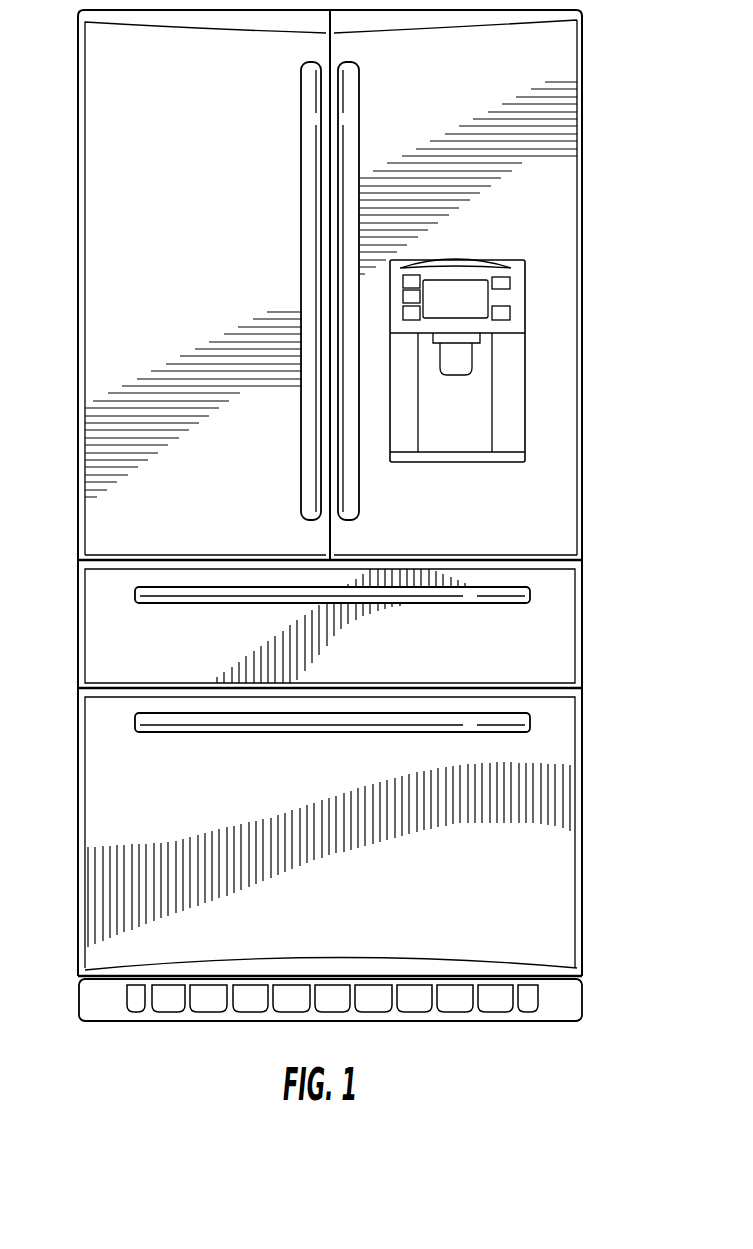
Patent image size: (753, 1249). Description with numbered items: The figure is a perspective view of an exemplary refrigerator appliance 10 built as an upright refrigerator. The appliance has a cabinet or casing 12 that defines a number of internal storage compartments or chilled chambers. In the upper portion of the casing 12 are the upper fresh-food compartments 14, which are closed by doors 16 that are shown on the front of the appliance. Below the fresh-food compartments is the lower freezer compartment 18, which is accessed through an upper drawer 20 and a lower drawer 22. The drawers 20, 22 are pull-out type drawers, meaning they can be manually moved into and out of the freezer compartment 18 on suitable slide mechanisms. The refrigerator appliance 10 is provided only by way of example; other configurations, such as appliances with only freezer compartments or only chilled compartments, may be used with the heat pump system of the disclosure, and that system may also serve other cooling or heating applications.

The refrigerator appliance 10 is at (609, 153).
The cabinet or casing 12 is at (582, 481).
The upper fresh-food compartments 14 is at (110, 204).
The doors 16 is at (235, 478).
The lower freezer compartment 18 is at (371, 626).
The upper drawer 20 is at (180, 655).
The lower drawer 22 is at (432, 910).